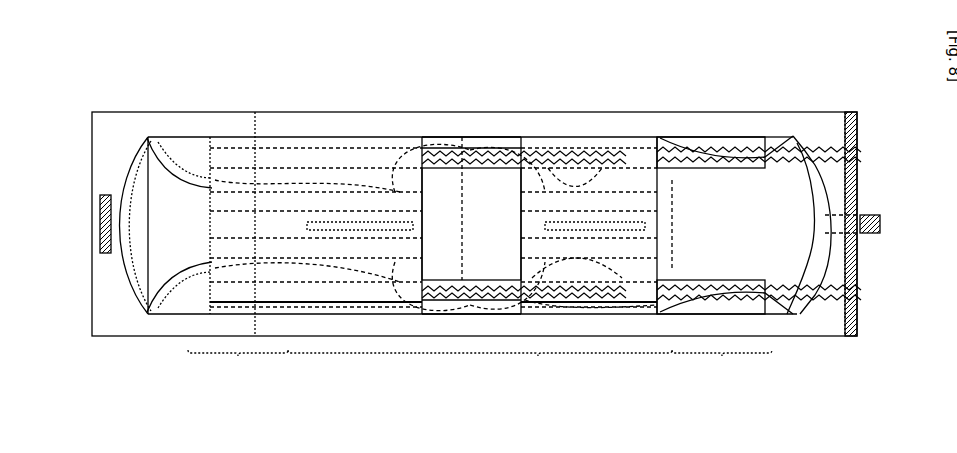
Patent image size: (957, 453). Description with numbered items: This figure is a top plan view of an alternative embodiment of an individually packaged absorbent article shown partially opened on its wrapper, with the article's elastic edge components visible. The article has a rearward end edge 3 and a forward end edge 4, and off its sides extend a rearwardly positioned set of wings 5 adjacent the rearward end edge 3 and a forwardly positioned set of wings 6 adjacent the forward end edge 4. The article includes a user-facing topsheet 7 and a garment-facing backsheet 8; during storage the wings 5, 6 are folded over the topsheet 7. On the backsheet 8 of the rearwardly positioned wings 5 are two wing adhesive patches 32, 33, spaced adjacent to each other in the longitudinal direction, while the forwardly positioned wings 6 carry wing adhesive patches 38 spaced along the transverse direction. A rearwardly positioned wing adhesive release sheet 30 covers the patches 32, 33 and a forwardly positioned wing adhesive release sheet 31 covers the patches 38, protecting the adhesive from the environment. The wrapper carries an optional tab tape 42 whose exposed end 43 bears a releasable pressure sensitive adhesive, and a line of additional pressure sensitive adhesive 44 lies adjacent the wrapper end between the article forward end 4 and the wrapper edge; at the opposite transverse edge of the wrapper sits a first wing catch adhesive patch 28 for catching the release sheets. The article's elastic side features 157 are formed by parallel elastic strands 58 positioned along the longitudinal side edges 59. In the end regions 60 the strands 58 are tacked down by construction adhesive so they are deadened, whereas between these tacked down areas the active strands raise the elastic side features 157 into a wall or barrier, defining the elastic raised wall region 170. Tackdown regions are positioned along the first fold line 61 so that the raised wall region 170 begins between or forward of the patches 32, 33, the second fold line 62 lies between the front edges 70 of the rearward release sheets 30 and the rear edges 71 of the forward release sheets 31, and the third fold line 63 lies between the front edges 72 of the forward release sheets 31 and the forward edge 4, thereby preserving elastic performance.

The rearward end edge 3 is at (122, 177).
The forward end edge 4 is at (825, 152).
The rearwardly positioned wings 5 is at (172, 143).
The forwardly positioned wings 6 is at (503, 285).
The topsheet 7 is at (770, 189).
The backsheet 8 is at (740, 150).
The first wing catch adhesive patch 28 is at (100, 230).
The rearwardly positioned wing adhesive release sheet 30 is at (365, 190).
The forwardly positioned wing adhesive release sheet 31 is at (553, 192).
The wing adhesive patch 32 is at (298, 185).
The wing adhesive patch 33 is at (235, 185).
The wing adhesive patch 38 is at (623, 318).
The tab tape 42 is at (880, 218).
The exposed end 43 is at (870, 233).
The line of additional pressure sensitive adhesive 44 is at (848, 291).
The elastic strands 58 is at (448, 150).
The longitudinal side edges 59 is at (518, 160).
The end regions 60 is at (480, 366).
The first fold line 61 is at (248, 128).
The second fold line 62 is at (462, 137).
The third fold line 63 is at (678, 128).
The front edges 70 is at (428, 165).
The rear edges 71 is at (518, 182).
The front edges 72 is at (660, 196).
The elastic side features 157 is at (483, 147).
The elastic raised wall region 170 is at (480, 367).